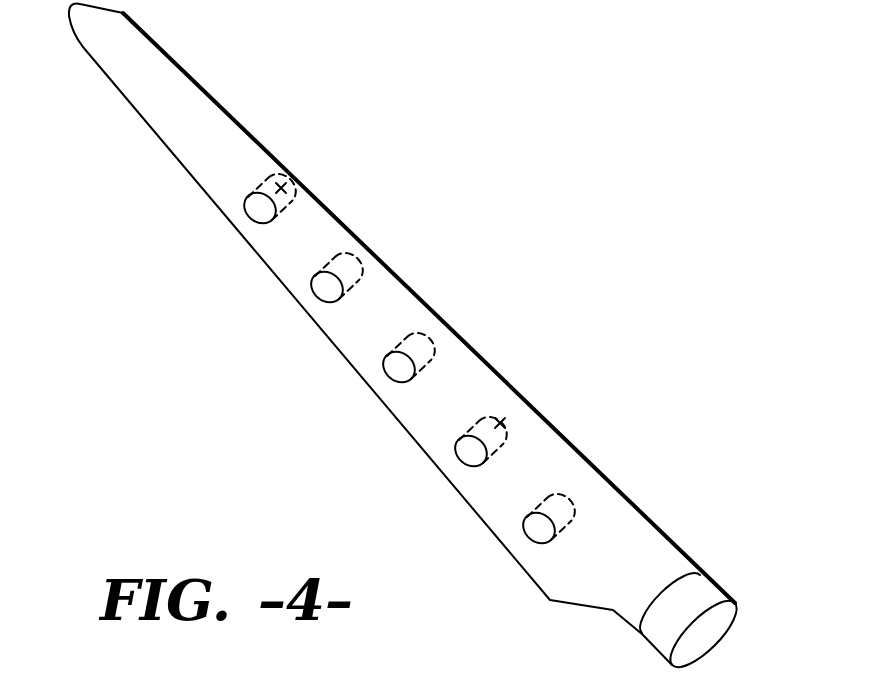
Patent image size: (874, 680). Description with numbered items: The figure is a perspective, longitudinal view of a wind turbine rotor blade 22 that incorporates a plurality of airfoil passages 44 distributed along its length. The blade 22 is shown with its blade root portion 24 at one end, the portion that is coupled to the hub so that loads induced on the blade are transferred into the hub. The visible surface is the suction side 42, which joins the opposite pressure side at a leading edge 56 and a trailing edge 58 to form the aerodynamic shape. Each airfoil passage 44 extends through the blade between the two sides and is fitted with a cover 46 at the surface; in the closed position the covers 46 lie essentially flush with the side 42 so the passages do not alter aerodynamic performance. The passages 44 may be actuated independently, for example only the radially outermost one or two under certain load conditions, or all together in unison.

The rotor blade 22 is at (450, 130).
The blade root portion 24 is at (700, 596).
The suction side 42 is at (358, 328).
The airfoil passage 44 is at (281, 188).
The cover 46 is at (262, 220).
The leading edge 56 is at (410, 287).
The trailing edge 58 is at (410, 438).